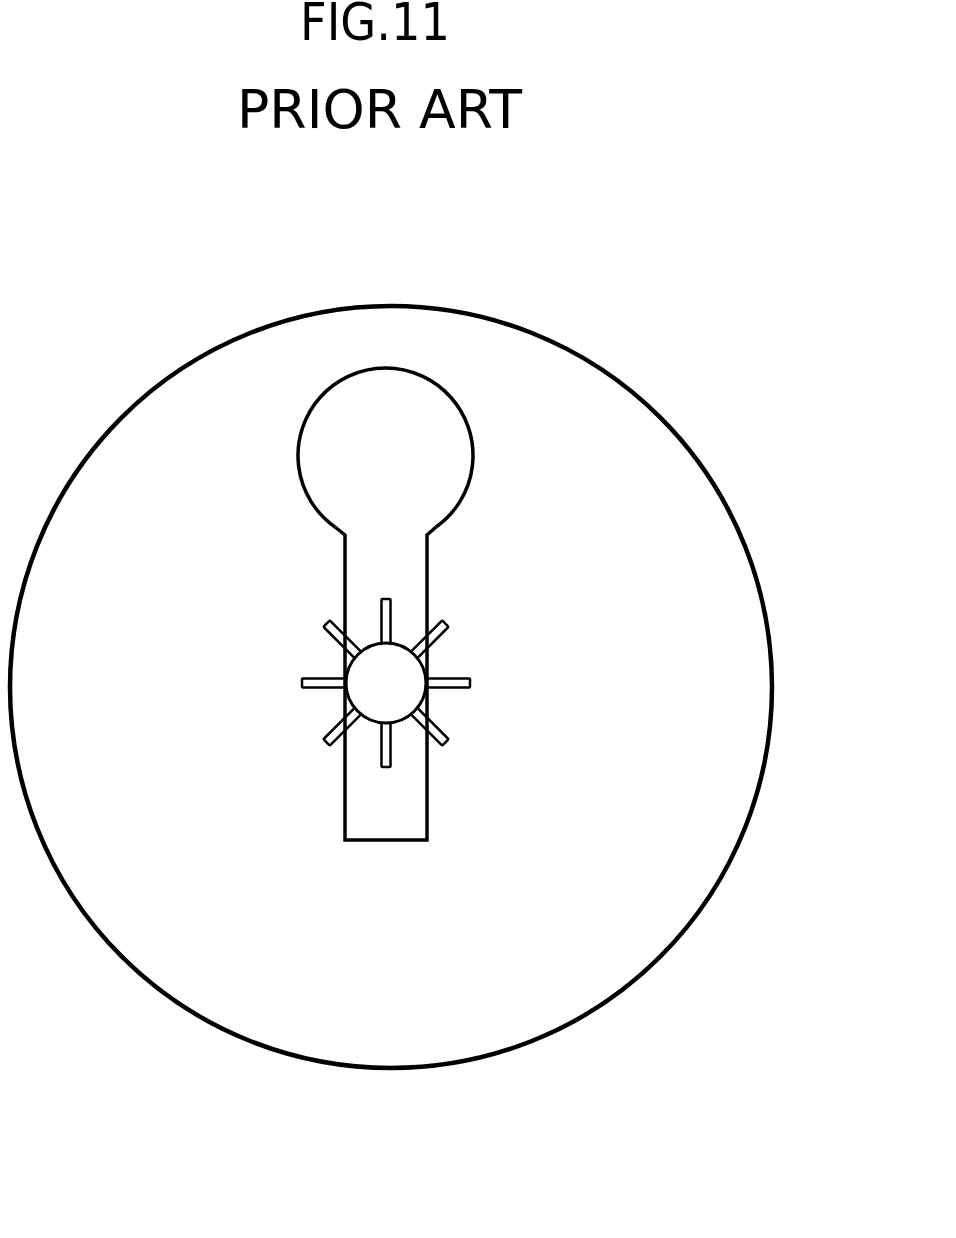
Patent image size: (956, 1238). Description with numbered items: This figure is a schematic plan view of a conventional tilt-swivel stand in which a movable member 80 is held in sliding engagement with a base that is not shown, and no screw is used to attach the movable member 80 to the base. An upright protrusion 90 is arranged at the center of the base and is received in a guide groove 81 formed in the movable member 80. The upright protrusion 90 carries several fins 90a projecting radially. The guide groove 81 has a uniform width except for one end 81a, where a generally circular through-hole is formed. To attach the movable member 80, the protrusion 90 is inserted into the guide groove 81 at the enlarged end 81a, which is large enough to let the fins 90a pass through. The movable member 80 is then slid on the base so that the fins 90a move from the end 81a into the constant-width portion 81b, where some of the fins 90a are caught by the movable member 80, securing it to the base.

The movable member 80 is at (737, 845).
The guide groove 81 is at (382, 677).
The enlarged end of guide groove 81a is at (473, 462).
The constant-width portion of guide groove 81b is at (270, 535).
The upright protrusion 90 is at (433, 666).
The fins 90a is at (392, 602).